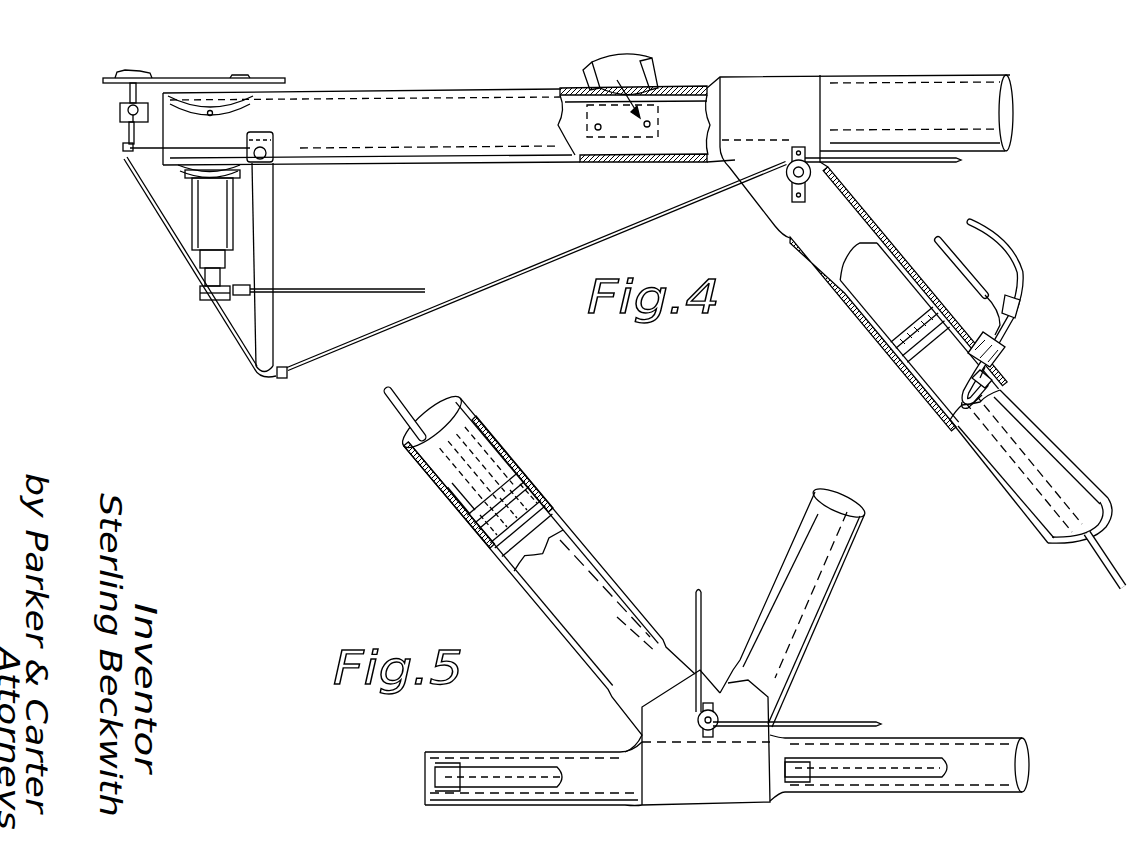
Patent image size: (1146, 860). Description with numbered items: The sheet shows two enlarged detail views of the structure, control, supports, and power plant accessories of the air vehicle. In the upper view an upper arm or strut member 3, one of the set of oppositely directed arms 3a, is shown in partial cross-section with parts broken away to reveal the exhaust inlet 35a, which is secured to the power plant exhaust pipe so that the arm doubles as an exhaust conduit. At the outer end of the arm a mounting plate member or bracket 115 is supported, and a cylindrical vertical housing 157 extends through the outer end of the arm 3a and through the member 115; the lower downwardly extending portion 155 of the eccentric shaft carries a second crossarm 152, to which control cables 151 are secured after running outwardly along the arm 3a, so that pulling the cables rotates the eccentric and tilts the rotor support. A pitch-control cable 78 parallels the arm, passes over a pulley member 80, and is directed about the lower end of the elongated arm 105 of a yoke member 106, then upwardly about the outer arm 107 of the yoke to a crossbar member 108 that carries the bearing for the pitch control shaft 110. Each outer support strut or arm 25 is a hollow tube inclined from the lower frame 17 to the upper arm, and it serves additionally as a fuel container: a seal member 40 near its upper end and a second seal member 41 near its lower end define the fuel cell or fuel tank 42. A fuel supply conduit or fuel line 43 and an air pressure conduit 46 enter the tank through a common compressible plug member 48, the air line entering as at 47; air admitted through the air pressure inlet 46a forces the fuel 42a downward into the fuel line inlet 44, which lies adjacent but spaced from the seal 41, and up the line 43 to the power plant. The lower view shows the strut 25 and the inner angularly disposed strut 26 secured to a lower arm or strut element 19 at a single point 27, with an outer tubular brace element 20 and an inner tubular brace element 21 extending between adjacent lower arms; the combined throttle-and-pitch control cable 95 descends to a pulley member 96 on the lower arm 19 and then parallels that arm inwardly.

In FIG. 4, the upper arm or strut member 3 is at (462, 157).
In FIG. 4, the oppositely directed arm 3a is at (458, 91).
In FIG. 4, the exhaust inlet 35a is at (632, 74).
In FIG. 4, the mounting plate member or bracket 115 is at (275, 77).
In FIG. 4, the pitch control shaft 110 is at (128, 93).
In FIG. 4, the crossbar member 108 is at (118, 113).
In FIG. 4, the arm of yoke 107 is at (122, 151).
In FIG. 4, the yoke member 106 is at (182, 153).
In FIG. 4, the cylindrical vertical housing 157 is at (200, 222).
In FIG. 4, the lower downwardly extending portion of eccentric shaft 155 is at (208, 272).
In FIG. 4, the second crossarm 152 is at (202, 296).
In FIG. 4, the control cable 151 is at (357, 288).
In FIG. 4, the elongated arm of yoke 105 is at (275, 249).
In FIG. 4, the pitch-control cable 78 is at (233, 330).
In FIG. 4, the pulley member 80 is at (788, 176).
In FIG. 4, the fuel cell or fuel tank 42 is at (948, 396).
In FIG. 5, the fuel cell or fuel tank 42 is at (493, 456).
In FIG. 4, the seal member 40 is at (900, 334).
In FIG. 4, the outer support strut or arm 25 is at (1013, 507).
In FIG. 5, the outer support strut or arm 25 is at (596, 556).
In FIG. 4, the fuel supply conduit or fuel line 43 is at (935, 246).
In FIG. 4, the air pressure conduit 46 is at (1020, 272).
In FIG. 4, the compressible plug member 48 is at (1005, 346).
In FIG. 4, the air pressure conduit entry point 47 is at (1003, 370).
In FIG. 4, the air pressure inlet 46a is at (994, 386).
In FIG. 5, the second seal member 41 is at (517, 491).
In FIG. 5, the fuel 42a is at (453, 496).
In FIG. 5, the fuel line inlet 44 is at (470, 514).
In FIG. 5, the inner angularly disposed strut or arm 26 is at (805, 531).
In FIG. 5, the securing point 27 is at (715, 768).
In FIG. 5, the combined throttle-and-pitch control cable 95 is at (702, 599).
In FIG. 5, the pulley member 96 is at (698, 720).
In FIG. 5, the outer tubular brace element 20 is at (505, 768).
In FIG. 5, the lower frame 17 is at (968, 740).
In FIG. 5, the lower arm or strut element 19 is at (1007, 747).
In FIG. 5, the inner tubular brace element 21 is at (910, 767).